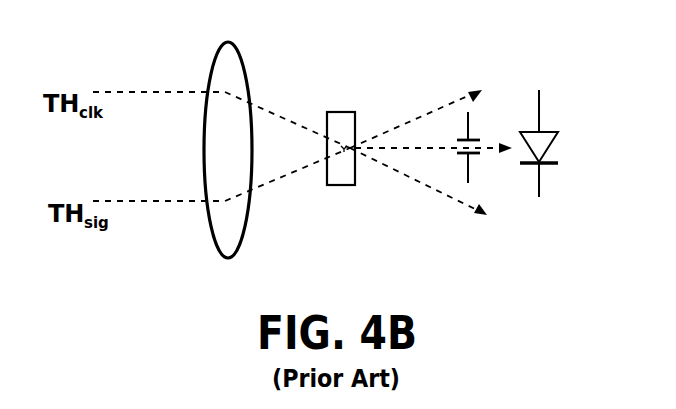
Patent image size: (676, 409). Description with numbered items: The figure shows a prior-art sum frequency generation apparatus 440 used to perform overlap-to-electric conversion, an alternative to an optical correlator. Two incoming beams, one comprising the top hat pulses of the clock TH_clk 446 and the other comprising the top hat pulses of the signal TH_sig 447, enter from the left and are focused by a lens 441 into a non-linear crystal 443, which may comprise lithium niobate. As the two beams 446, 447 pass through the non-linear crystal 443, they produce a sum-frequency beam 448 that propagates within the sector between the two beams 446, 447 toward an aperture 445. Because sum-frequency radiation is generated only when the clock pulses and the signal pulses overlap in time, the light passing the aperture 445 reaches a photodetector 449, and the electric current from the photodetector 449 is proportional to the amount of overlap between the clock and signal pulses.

The sum frequency generation apparatus 440 is at (353, 46).
The lens 441 is at (248, 218).
The non-linear crystal 443 is at (340, 186).
The aperture 445 is at (476, 165).
The clock top hat pulse beam 446 is at (127, 93).
The signal top hat pulse beam 447 is at (148, 201).
The sum-frequency beam 448 is at (393, 150).
The photodetector 449 is at (552, 142).